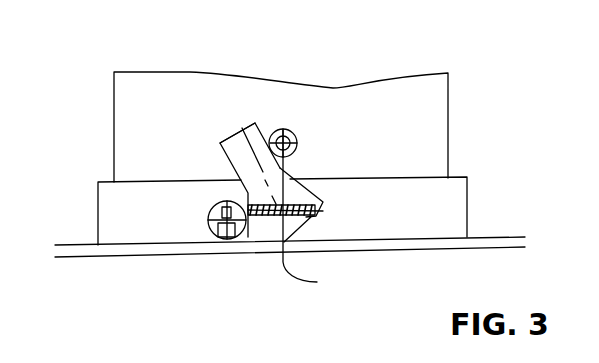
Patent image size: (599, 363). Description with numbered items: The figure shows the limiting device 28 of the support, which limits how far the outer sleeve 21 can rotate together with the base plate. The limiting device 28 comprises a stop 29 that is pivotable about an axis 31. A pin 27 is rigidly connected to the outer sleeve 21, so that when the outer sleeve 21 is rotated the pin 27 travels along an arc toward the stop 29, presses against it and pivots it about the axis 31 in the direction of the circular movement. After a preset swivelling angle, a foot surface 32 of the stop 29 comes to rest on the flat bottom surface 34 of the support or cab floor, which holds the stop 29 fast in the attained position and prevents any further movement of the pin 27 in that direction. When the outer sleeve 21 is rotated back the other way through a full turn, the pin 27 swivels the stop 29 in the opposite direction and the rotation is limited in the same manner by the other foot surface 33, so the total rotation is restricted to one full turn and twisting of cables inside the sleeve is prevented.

The outer sleeve 21 is at (120, 126).
The pin 27 is at (293, 128).
The limiting device 28 is at (212, 130).
The stop 29 is at (248, 130).
The axis 31 is at (308, 220).
The foot surface 32 is at (258, 250).
The other foot surface 33 is at (318, 210).
The flat bottom surface 34 is at (162, 257).